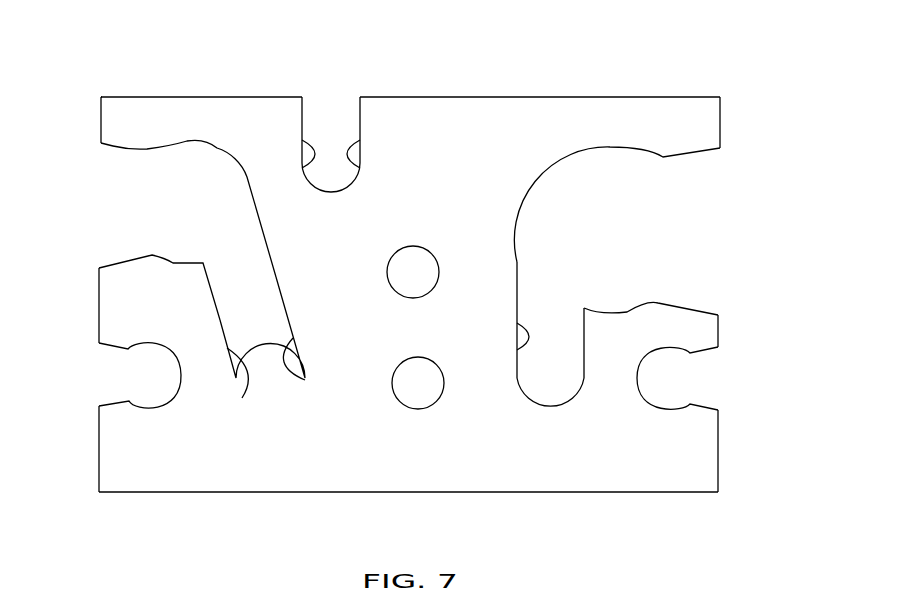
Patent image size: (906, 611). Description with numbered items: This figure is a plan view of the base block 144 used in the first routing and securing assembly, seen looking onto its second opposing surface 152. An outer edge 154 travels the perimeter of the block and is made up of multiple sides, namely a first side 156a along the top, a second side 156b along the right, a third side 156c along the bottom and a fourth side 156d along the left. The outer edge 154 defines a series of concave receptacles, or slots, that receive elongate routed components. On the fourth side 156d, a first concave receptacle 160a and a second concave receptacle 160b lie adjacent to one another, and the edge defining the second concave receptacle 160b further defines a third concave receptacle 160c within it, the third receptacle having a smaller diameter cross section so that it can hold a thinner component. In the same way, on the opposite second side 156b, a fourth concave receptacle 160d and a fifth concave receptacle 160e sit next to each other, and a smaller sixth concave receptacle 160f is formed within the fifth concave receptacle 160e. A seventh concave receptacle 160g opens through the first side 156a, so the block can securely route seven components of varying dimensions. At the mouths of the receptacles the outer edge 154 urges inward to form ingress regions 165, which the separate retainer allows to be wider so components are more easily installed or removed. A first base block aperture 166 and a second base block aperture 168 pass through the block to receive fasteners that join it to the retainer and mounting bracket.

The base block 144 is at (645, 36).
The second opposing surface 152 is at (343, 462).
The outer edge 154 is at (101, 97).
The first side 156a is at (203, 97).
The second side 156b is at (722, 124).
The third side 156c is at (407, 493).
The fourth side 156d is at (101, 119).
The first concave receptacle 160a is at (152, 374).
The second concave receptacle 160b is at (176, 204).
The third concave receptacle 160c is at (281, 386).
The fourth concave receptacle 160d is at (666, 377).
The fifth concave receptacle 160e is at (628, 227).
The sixth concave receptacle 160f is at (563, 378).
The seventh concave receptacle 160g is at (328, 165).
The ingress regions 165 is at (301, 142).
The first base block aperture 166 is at (428, 282).
The second base block aperture 168 is at (433, 393).